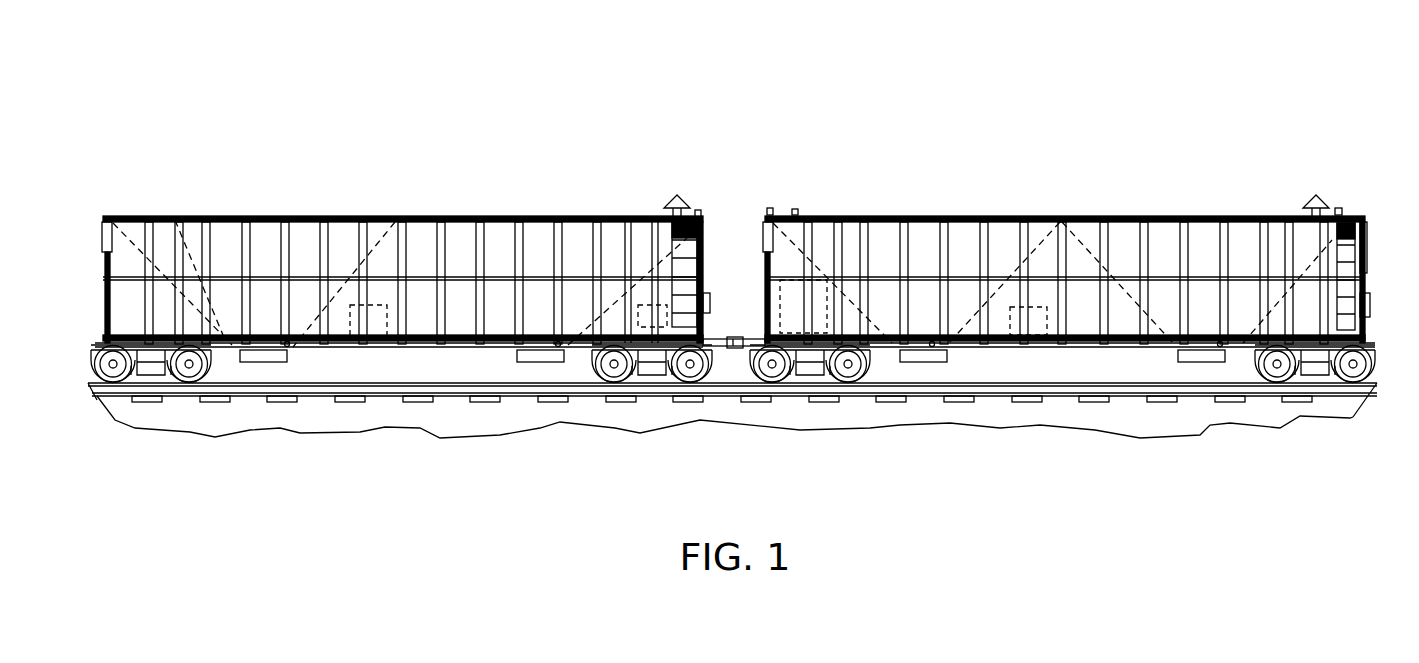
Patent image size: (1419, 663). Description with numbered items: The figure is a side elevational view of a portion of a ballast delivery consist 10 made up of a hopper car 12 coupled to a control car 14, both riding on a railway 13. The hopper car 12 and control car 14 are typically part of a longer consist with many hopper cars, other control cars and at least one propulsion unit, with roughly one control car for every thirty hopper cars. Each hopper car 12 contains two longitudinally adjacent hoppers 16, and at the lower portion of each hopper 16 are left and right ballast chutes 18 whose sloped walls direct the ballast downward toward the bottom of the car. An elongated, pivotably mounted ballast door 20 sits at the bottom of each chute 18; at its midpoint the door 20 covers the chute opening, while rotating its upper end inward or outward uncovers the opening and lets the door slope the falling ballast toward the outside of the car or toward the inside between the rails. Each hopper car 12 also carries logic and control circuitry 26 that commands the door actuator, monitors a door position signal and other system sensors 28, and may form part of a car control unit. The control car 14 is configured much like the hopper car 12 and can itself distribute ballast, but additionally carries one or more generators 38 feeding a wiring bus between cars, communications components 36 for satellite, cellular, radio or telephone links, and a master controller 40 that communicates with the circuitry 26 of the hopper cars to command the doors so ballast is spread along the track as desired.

The ballast delivery consist 10 is at (906, 96).
The hopper car 12 is at (612, 217).
The railway 13 is at (1275, 397).
The control car 14 is at (1135, 217).
The hopper 16 is at (310, 237).
The ballast chute 18 is at (175, 220).
The ballast door 20 is at (263, 362).
The logic and control circuitry 26 is at (350, 337).
The sensor 28 is at (286, 341).
The communications components 36 is at (795, 209).
The generator 38 is at (752, 385).
The master controller 40 is at (1015, 337).